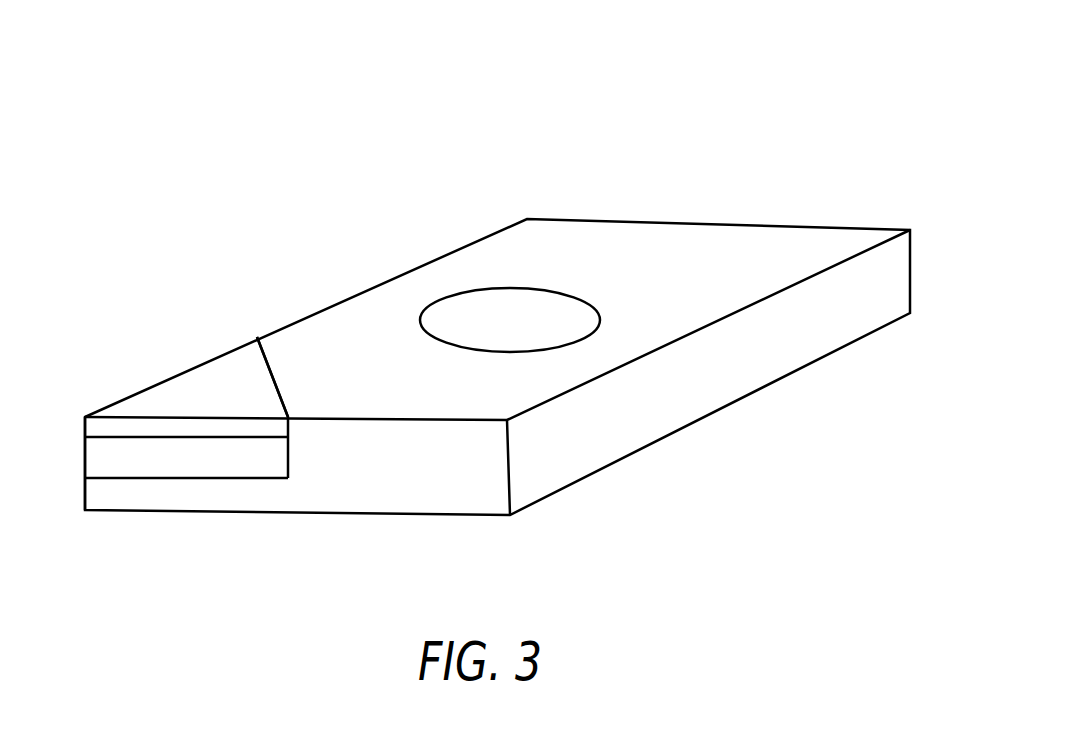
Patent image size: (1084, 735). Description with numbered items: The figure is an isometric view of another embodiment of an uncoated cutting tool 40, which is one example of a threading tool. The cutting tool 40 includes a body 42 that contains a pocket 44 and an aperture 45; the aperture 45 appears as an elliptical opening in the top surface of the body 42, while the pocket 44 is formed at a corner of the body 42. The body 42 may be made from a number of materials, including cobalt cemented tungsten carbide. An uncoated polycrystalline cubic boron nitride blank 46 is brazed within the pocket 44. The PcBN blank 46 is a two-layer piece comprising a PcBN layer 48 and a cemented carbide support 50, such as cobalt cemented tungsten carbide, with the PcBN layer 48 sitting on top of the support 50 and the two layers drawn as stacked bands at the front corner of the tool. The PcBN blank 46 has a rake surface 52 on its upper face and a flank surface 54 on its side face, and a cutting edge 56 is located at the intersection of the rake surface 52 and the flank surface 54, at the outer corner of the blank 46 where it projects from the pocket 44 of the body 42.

The cutting tool 40 is at (652, 136).
The body 42 is at (887, 265).
The pocket 44 is at (273, 372).
The aperture 45 is at (488, 316).
The polycrystalline cubic boron nitride blank 46 is at (82, 455).
The PcBN layer 48 is at (168, 432).
The cemented carbide support 50 is at (155, 458).
The rake surface 52 is at (220, 373).
The flank surface 54 is at (252, 425).
The cutting edge 56 is at (83, 415).